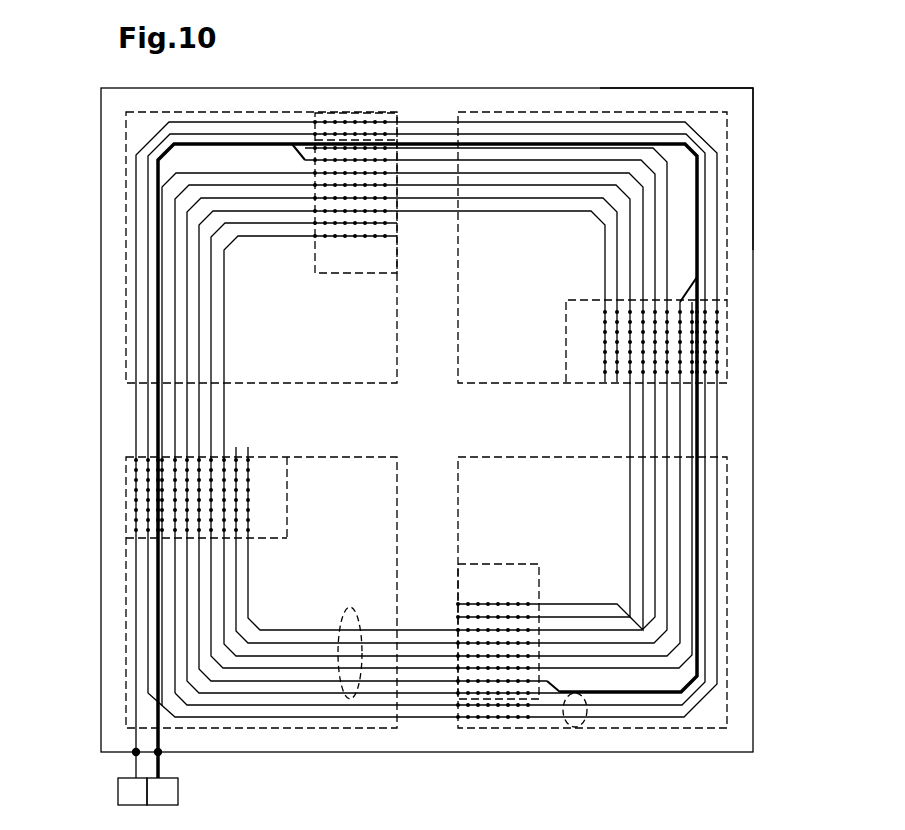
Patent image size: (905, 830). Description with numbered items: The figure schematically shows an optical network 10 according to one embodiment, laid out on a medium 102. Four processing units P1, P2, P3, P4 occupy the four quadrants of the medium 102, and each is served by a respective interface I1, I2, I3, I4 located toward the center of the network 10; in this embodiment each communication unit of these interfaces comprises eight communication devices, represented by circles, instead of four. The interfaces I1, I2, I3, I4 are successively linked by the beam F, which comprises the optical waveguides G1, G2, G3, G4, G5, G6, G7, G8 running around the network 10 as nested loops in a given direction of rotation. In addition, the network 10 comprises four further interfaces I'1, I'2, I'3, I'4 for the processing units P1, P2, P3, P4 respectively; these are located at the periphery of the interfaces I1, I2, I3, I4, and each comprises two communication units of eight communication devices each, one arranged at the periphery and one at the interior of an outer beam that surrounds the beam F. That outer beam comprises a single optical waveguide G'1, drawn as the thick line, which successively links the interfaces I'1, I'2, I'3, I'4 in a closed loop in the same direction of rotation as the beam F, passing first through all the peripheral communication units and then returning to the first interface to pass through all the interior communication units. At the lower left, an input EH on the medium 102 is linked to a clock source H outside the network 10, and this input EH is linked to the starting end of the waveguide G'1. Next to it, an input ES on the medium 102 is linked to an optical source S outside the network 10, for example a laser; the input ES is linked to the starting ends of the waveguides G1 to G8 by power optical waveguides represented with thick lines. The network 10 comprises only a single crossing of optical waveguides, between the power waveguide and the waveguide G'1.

The optical network 10 is at (60, 163).
The medium 102 is at (740, 88).
The processing unit P1 is at (242, 729).
The processing unit P2 is at (352, 384).
The processing unit P3 is at (507, 384).
The processing unit P4 is at (640, 729).
The interface I1 is at (288, 497).
The interface I2 is at (360, 276).
The interface I3 is at (567, 335).
The interface I4 is at (492, 563).
The interface I'1 is at (160, 500).
The interface I'2 is at (361, 131).
The interface I'3 is at (708, 365).
The interface I'4 is at (488, 709).
The optical waveguide G1 is at (593, 603).
The optical waveguide G2 is at (600, 617).
The optical waveguide G3 is at (410, 631).
The optical waveguide G4 is at (420, 644).
The optical waveguide G5 is at (273, 655).
The optical waveguide G6 is at (287, 668).
The optical waveguide G7 is at (303, 680).
The optical waveguide G8 is at (312, 695).
The optical waveguide G'1 is at (359, 448).
The beam F is at (350, 608).
The input EH is at (135, 754).
The input ES is at (160, 754).
The clock source H is at (132, 791).
The optical source S is at (162, 791).